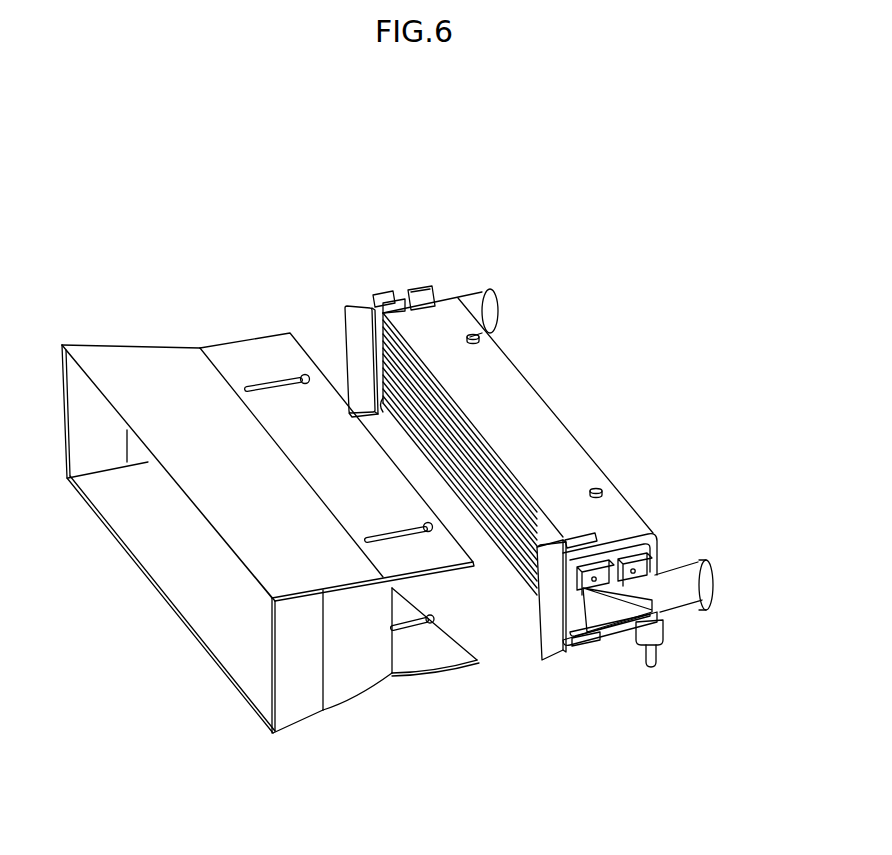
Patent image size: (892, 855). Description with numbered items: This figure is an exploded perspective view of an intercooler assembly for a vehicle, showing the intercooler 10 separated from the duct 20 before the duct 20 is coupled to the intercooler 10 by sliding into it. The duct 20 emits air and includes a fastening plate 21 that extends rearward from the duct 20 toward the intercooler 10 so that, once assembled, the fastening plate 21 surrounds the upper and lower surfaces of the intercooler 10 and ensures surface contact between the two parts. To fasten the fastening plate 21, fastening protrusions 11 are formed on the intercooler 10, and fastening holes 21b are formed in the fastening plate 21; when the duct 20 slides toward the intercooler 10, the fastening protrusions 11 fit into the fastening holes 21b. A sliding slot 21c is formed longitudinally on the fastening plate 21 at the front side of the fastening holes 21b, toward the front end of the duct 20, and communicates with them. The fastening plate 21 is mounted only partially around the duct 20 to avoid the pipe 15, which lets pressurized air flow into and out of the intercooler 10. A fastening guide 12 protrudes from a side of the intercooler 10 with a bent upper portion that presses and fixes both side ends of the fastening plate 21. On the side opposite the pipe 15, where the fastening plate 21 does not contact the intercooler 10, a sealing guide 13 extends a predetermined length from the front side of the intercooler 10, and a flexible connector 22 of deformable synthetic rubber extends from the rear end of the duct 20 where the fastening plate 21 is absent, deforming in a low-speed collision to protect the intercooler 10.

The intercooler 10 is at (512, 385).
The fastening protrusions 11 is at (497, 308).
The fastening guide 12 is at (418, 288).
The sealing guide 13 is at (360, 312).
The pipe 15 is at (688, 583).
The duct 20 is at (187, 578).
The fastening plate 21 is at (316, 420).
The fastening holes 21b is at (300, 376).
The sliding slot 21c is at (255, 383).
The flexible connector 22 is at (360, 678).